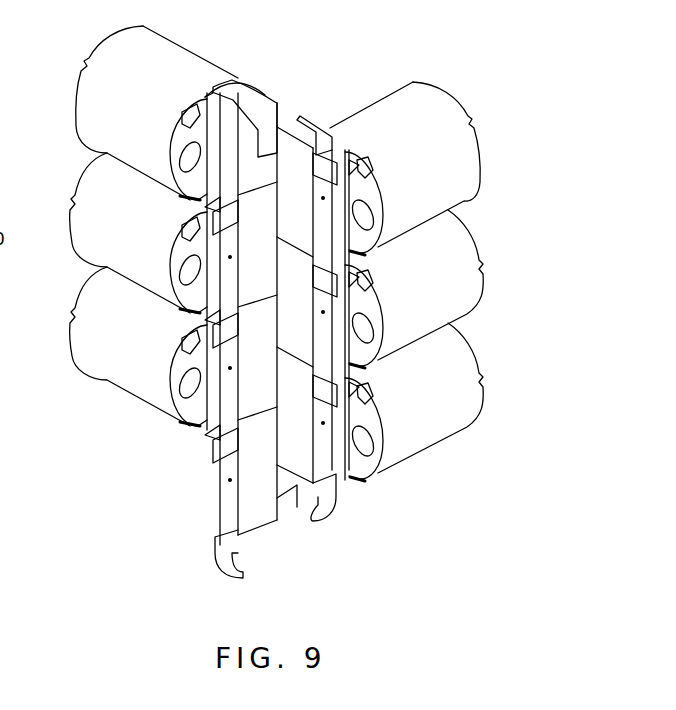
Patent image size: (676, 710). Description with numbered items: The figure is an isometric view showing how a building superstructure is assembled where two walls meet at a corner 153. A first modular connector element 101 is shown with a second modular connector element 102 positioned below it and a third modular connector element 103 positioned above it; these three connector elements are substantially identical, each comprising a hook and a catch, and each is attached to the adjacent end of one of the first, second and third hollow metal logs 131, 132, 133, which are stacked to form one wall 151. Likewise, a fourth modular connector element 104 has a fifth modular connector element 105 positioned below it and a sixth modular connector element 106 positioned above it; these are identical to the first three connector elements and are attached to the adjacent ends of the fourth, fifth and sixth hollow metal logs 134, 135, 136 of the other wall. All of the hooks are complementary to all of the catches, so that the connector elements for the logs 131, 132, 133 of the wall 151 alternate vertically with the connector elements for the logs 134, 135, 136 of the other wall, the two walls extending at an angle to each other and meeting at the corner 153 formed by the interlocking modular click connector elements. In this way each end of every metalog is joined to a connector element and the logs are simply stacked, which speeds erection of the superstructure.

The first modular connector element 101 is at (370, 307).
The second modular connector element 102 is at (370, 420).
The third modular connector element 103 is at (368, 197).
The fourth modular connector element 104 is at (183, 249).
The fifth modular connector element 105 is at (133, 410).
The sixth modular connector element 106 is at (183, 138).
The first hollow metal log 131 is at (455, 250).
The second hollow metal log 132 is at (460, 365).
The third hollow metal log 133 is at (452, 163).
The fourth hollow metal log 134 is at (90, 202).
The fifth hollow metal log 135 is at (88, 317).
The sixth hollow metal log 136 is at (95, 116).
The wall 151 is at (431, 322).
The corner 153 is at (127, 248).